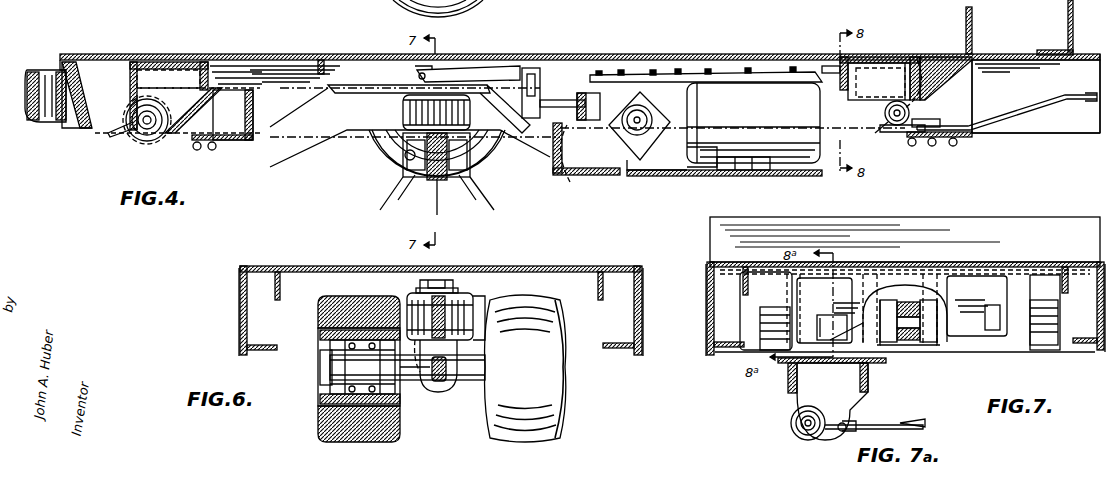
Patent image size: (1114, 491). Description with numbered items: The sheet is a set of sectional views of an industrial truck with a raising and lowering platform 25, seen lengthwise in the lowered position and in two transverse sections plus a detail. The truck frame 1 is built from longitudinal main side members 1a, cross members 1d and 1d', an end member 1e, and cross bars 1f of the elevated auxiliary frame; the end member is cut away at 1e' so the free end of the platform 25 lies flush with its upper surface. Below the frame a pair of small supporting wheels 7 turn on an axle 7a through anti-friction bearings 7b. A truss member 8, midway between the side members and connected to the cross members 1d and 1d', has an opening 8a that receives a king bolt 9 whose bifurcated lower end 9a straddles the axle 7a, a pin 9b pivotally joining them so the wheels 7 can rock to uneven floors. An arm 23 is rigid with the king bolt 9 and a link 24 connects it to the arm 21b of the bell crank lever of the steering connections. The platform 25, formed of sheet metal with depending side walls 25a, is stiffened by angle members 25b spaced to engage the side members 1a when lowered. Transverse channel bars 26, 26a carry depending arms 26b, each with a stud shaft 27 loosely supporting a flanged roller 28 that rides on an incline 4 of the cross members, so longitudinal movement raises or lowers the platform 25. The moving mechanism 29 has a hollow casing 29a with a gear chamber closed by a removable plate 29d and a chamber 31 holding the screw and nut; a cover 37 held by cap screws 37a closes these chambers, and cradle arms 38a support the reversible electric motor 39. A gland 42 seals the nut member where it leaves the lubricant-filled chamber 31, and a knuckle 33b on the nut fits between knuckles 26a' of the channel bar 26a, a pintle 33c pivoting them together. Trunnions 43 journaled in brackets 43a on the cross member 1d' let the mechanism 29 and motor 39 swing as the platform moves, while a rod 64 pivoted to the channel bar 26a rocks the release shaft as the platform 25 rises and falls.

In FIG. 4, the truck frame 1 is at (1003, 60).
In FIG. 6, the truck frame 1 is at (240, 308).
In FIG. 7, the truck frame 1 is at (712, 356).
In FIG. 4, the main side member 1a is at (1030, 124).
In FIG. 6, the main side member 1a is at (250, 326).
In FIG. 7, the main side member 1a is at (716, 300).
In FIG. 4, the cross member 1d is at (575, 157).
In FIG. 4, the cross member 1d' is at (586, 163).
In FIG. 4, the end member 1e is at (58, 110).
In FIG. 4, the cut-away portion 1e' is at (34, 55).
In FIG. 4, the cross bar 1f is at (1067, 27).
In FIG. 4, the incline 4 is at (555, 114).
In FIG. 7, the incline 4 is at (767, 303).
In FIG. 4, the supporting wheel 7 is at (500, 196).
In FIG. 6, the supporting wheel 7 is at (322, 430).
In FIG. 4, the axle 7a is at (412, 2).
In FIG. 6, the axle 7a is at (418, 385).
In FIG. 6, the anti-friction bearing 7b is at (320, 391).
In FIG. 4, the truss member 8 is at (308, 148).
In FIG. 6, the truss member 8 is at (465, 296).
In FIG. 4, the opening 8a is at (403, 112).
In FIG. 4, the king bolt 9 is at (470, 114).
In FIG. 6, the king bolt 9 is at (447, 290).
In FIG. 4, the bifurcation 9a is at (420, 178).
In FIG. 6, the bifurcation 9a is at (441, 385).
In FIG. 4, the pin 9b is at (405, 158).
In FIG. 6, the pin 9b is at (445, 372).
In FIG. 4, the arm of bell crank lever 21b is at (527, 135).
In FIG. 4, the arm 23 is at (483, 70).
In FIG. 6, the arm 23 is at (420, 283).
In FIG. 4, the link 24 is at (532, 118).
In FIG. 4, the raising and lowering platform 25 is at (600, 54).
In FIG. 6, the raising and lowering platform 25 is at (330, 266).
In FIG. 7, the raising and lowering platform 25 is at (877, 274).
In FIG. 7A, the raising and lowering platform 25 is at (880, 365).
In FIG. 6, the depending side wall 25a is at (238, 297).
In FIG. 7, the depending side wall 25a is at (706, 278).
In FIG. 4, the angle member 25b is at (321, 60).
In FIG. 6, the angle member 25b is at (280, 288).
In FIG. 7, the angle member 25b is at (743, 290).
In FIG. 4, the channel bar 26 is at (169, 96).
In FIG. 4, the channel bar 26a is at (913, 65).
In FIG. 7, the channel bar 26a is at (979, 278).
In FIG. 7A, the channel bar 26a is at (832, 401).
In FIG. 4, the knuckle 26a' is at (906, 154).
In FIG. 7, the knuckle 26a' is at (926, 340).
In FIG. 4, the depending arm 26b is at (137, 104).
In FIG. 7, the depending arm 26b is at (817, 320).
In FIG. 7A, the depending arm 26b is at (788, 395).
In FIG. 4, the stud shaft 27 is at (138, 132).
In FIG. 7, the stud shaft 27 is at (835, 332).
In FIG. 7A, the stud shaft 27 is at (800, 440).
In FIG. 4, the roller 28 is at (110, 135).
In FIG. 7A, the roller 28 is at (790, 428).
In FIG. 4, the platform moving mechanism 29 is at (753, 123).
In FIG. 4, the hollow casing 29a is at (667, 170).
In FIG. 4, the removable plate 29d is at (568, 182).
In FIG. 4, the chamber 31 is at (831, 60).
In FIG. 4, the knuckle 33b is at (917, 60).
In FIG. 7, the knuckle 33b is at (912, 346).
In FIG. 4, the pintle 33c is at (922, 124).
In FIG. 7, the pintle 33c is at (908, 300).
In FIG. 4, the cover 37 is at (742, 72).
In FIG. 4, the cap screw 37a is at (678, 69).
In FIG. 4, the cradle arm 38a is at (757, 171).
In FIG. 4, the electric motor 39 is at (820, 177).
In FIG. 4, the gland 42 is at (867, 56).
In FIG. 4, the trunnion 43 is at (638, 104).
In FIG. 4, the bracket 43a is at (637, 162).
In FIG. 4, the rod 64 is at (1033, 107).
In FIG. 7A, the rod 64 is at (925, 422).